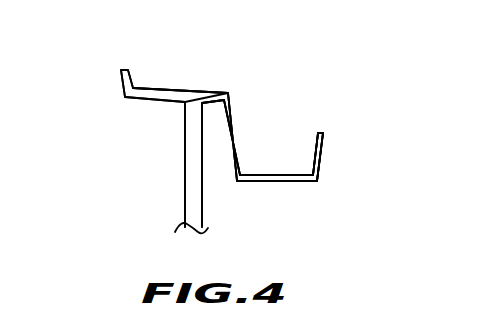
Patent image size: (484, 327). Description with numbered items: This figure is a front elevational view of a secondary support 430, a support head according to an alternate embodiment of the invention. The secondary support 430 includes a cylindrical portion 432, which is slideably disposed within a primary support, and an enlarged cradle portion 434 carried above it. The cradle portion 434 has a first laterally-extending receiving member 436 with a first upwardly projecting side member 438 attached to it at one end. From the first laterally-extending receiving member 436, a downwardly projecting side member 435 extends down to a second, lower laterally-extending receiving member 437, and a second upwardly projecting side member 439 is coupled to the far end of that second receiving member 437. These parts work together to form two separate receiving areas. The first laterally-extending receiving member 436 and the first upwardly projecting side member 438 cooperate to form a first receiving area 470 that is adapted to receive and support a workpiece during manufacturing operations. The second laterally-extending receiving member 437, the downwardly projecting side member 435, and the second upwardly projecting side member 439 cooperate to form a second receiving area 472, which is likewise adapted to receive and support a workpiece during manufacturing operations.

The secondary support 430 is at (97, 54).
The first receiving area 470 is at (165, 60).
The first upwardly projecting side member 438 is at (122, 83).
The cradle portion 434 is at (132, 125).
The first laterally-extending receiving member 436 is at (197, 90).
The downwardly projecting side member 435 is at (235, 122).
The second laterally-extending receiving member 437 is at (287, 173).
The second upwardly projecting side member 439 is at (320, 157).
The second receiving area 472 is at (316, 123).
The cylindrical portion 432 is at (185, 182).